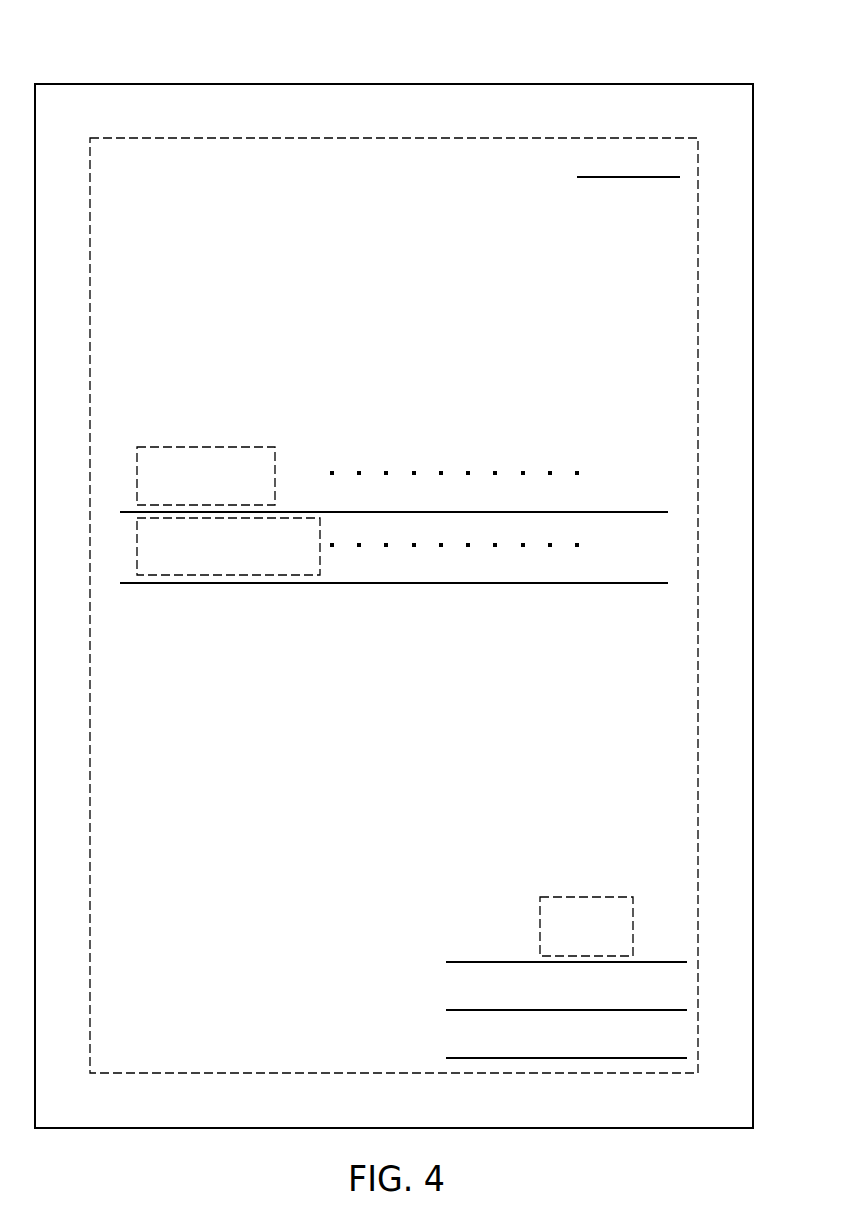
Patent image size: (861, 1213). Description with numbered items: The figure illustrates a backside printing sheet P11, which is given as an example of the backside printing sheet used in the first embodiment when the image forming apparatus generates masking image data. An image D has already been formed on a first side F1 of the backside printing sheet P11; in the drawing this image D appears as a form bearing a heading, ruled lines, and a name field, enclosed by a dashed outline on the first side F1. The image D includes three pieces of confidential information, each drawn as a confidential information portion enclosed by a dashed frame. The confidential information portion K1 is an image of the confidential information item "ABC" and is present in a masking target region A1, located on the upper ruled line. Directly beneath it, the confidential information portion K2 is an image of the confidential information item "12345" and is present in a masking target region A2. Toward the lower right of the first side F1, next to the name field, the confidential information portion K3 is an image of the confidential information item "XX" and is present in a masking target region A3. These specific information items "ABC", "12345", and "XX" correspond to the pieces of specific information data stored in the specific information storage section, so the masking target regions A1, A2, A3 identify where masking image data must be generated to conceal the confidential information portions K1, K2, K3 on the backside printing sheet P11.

The backside printing sheet P11 is at (185, 83).
The image D is at (370, 137).
The first side F1 is at (728, 210).
The masking target region A1 is at (178, 447).
The confidential information portion K1 is at (232, 445).
The masking target region A2 is at (293, 576).
The confidential information portion K2 is at (160, 581).
The masking target region A3 is at (563, 896).
The confidential information portion K3 is at (638, 918).